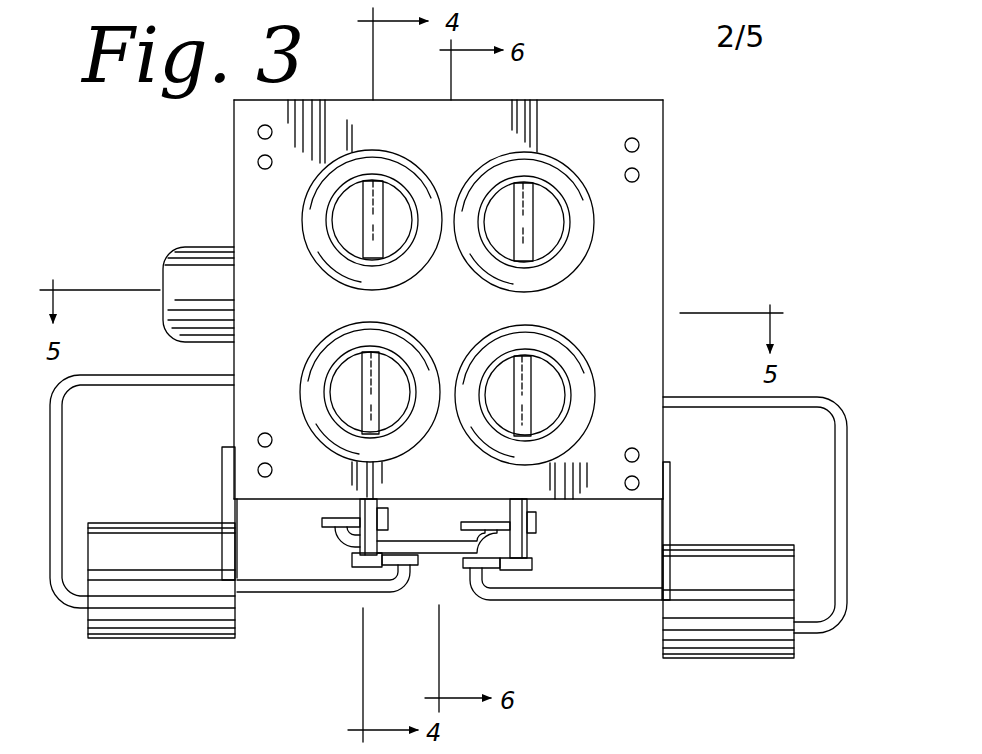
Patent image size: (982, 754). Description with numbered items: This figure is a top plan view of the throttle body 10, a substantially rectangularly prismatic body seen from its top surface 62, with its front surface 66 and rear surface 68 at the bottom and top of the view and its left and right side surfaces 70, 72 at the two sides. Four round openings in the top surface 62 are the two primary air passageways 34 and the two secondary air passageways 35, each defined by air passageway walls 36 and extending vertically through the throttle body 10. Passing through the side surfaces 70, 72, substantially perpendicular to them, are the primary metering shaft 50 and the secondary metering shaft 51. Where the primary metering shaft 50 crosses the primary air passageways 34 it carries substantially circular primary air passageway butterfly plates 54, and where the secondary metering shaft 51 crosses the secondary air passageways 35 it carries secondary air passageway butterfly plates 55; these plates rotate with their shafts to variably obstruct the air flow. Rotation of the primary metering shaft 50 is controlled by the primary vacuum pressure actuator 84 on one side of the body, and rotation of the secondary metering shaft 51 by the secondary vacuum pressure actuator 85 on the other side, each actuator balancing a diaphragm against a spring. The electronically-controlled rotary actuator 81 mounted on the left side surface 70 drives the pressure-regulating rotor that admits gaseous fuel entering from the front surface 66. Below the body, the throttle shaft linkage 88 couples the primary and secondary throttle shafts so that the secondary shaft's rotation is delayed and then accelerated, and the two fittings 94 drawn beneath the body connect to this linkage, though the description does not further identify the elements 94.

The throttle body 10 is at (633, 198).
The primary air passageways 34 is at (330, 213).
The secondary air passageways 35 is at (573, 220).
The air passageway walls 36 is at (350, 178).
The primary metering shaft 50 is at (363, 203).
The secondary metering shaft 51 is at (523, 243).
The primary air passageway butterfly plates 54 is at (355, 227).
The secondary air passageway butterfly plates 55 is at (548, 199).
The top surface 62 is at (598, 122).
The front surface 66 is at (573, 499).
The rear surface 68 is at (503, 100).
The left side surface 70 is at (234, 183).
The right side surface 72 is at (665, 108).
The electronically-controlled rotary actuator 81 is at (193, 278).
The primary vacuum pressure actuator 84 is at (88, 618).
The secondary vacuum pressure actuator 85 is at (797, 643).
The throttle shaft linkage 88 is at (437, 552).
The tube fitting 94 is at (303, 590).